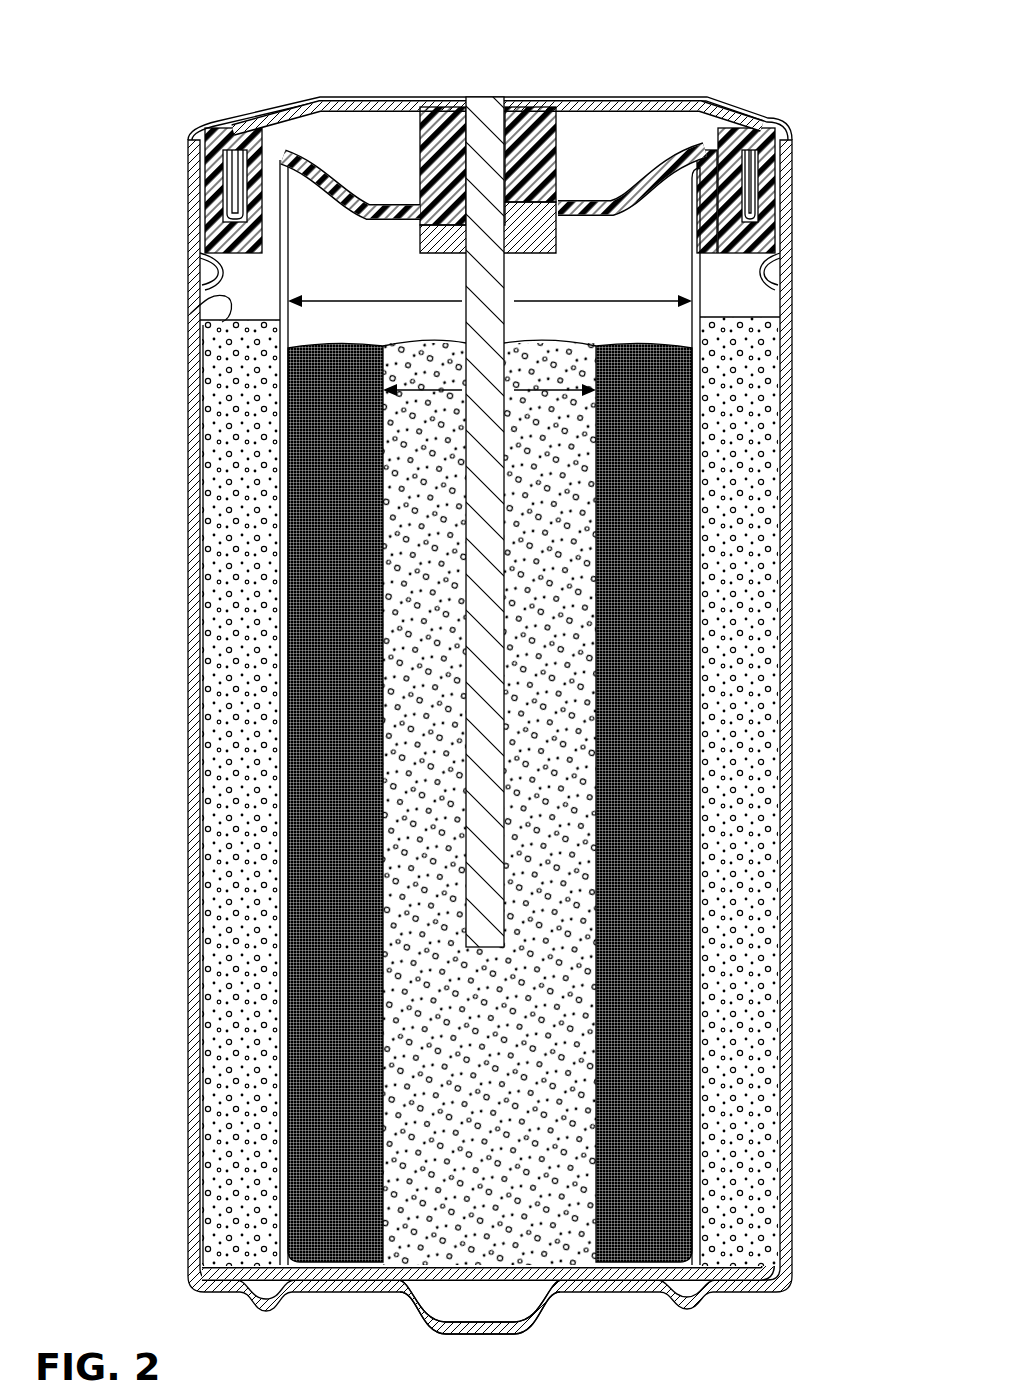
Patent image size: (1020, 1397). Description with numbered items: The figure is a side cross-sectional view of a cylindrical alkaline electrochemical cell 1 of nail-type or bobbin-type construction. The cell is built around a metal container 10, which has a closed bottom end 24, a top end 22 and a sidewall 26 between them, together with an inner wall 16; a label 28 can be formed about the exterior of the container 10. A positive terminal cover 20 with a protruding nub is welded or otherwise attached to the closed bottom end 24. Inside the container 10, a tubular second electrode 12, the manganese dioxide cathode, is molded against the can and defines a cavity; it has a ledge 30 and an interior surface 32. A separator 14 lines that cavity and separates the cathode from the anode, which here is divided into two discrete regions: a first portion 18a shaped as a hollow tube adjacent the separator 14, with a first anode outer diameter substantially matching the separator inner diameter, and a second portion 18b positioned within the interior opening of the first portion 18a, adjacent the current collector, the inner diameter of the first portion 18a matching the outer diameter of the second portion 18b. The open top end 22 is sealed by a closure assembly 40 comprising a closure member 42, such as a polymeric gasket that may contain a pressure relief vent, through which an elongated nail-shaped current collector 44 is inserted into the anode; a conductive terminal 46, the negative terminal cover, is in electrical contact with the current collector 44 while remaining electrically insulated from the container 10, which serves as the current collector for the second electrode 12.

The electrochemical cell 1 is at (790, 580).
The container 10 is at (784, 443).
The second electrode 12 is at (723, 933).
The separator 14 is at (697, 1033).
The inner wall 16 is at (764, 306).
The first portion 18a is at (653, 902).
The second portion 18b is at (583, 832).
The terminal cover 20 is at (577, 1293).
The top end 22 is at (700, 100).
The closed bottom end 24 is at (387, 1278).
The sidewall 26 is at (200, 808).
The label 28 is at (200, 560).
The ledge 30 is at (200, 320).
The interior surface 32 is at (700, 763).
The closure assembly 40 is at (617, 162).
The closure member 42 is at (337, 170).
The current collector 44 is at (497, 728).
The conductive terminal 46 is at (513, 100).